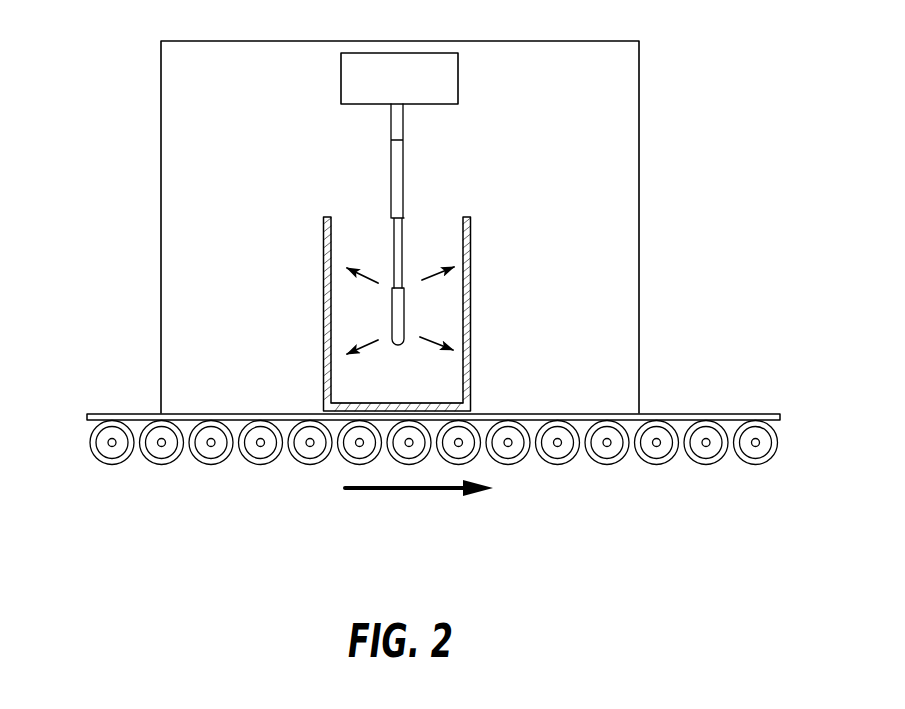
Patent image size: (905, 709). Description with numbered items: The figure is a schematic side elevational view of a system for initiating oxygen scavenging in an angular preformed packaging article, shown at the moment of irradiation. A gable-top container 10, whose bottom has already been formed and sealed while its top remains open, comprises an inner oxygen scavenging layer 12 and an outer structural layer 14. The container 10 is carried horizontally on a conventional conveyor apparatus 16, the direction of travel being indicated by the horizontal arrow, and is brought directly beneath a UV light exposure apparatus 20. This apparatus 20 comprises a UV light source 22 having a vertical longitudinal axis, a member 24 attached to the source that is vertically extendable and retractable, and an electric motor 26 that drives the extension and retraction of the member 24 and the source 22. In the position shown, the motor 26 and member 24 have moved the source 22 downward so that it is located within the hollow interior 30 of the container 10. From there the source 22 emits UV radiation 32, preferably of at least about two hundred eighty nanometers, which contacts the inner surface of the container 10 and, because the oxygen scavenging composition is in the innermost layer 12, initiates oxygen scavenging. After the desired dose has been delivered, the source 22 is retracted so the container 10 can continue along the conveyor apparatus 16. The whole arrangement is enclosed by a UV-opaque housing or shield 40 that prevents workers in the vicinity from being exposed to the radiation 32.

The gable-top container 10 is at (492, 212).
The inner oxygen scavenging layer 12 is at (463, 223).
The outer structural layer 14 is at (472, 392).
The conveyor apparatus 16 is at (132, 477).
The UV light exposure apparatus 20 is at (347, 137).
The UV light source 22 is at (400, 343).
The member 24 is at (403, 148).
The electric motor 26 is at (458, 77).
The hollow interior 30 is at (378, 367).
The UV radiation 32 is at (347, 352).
The housing or shield 40 is at (639, 218).